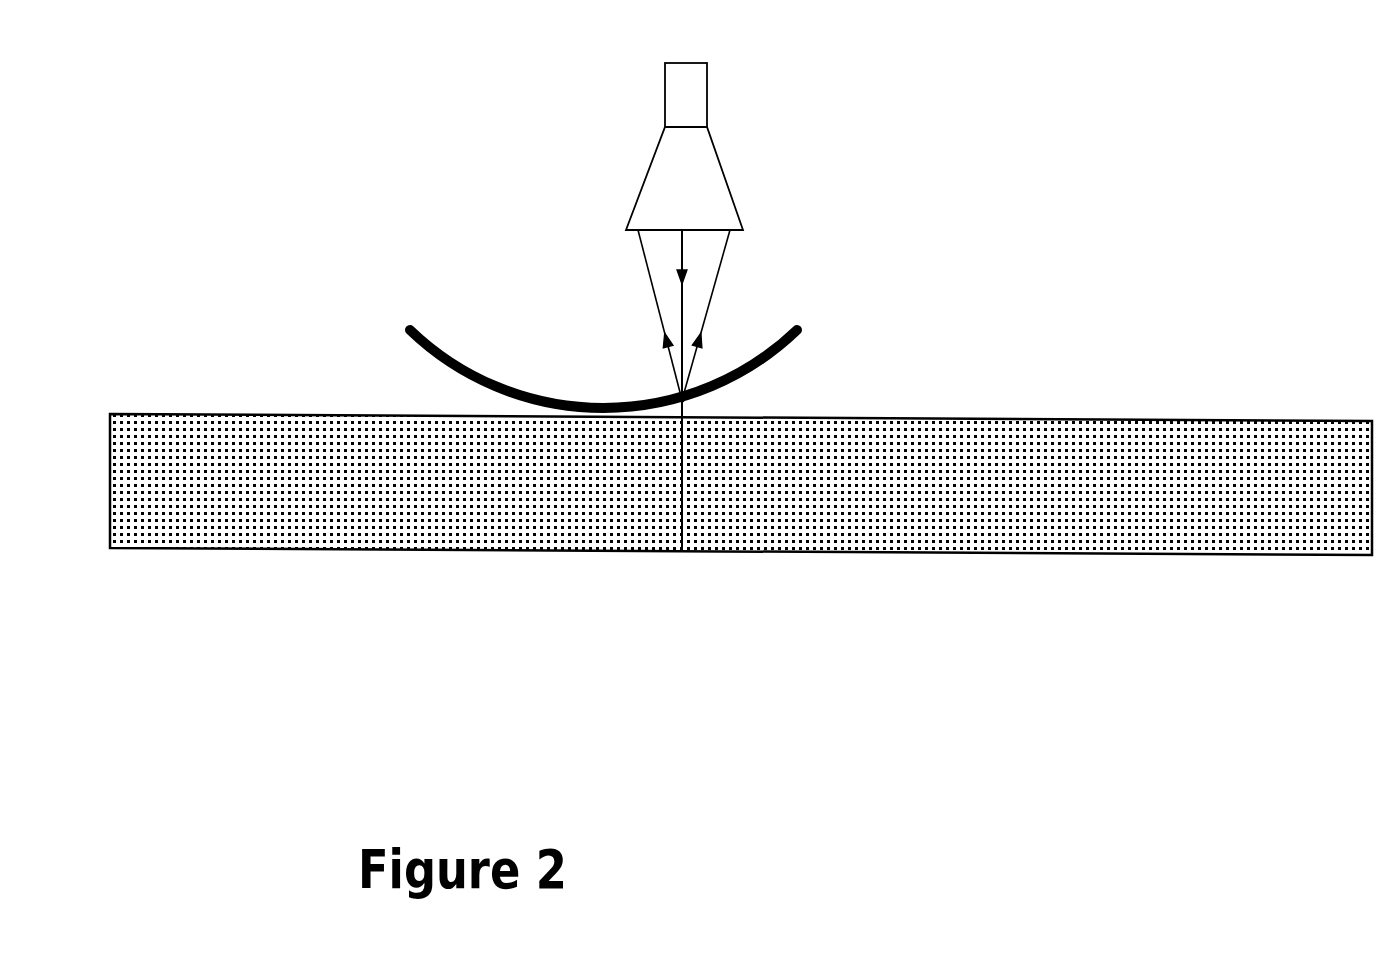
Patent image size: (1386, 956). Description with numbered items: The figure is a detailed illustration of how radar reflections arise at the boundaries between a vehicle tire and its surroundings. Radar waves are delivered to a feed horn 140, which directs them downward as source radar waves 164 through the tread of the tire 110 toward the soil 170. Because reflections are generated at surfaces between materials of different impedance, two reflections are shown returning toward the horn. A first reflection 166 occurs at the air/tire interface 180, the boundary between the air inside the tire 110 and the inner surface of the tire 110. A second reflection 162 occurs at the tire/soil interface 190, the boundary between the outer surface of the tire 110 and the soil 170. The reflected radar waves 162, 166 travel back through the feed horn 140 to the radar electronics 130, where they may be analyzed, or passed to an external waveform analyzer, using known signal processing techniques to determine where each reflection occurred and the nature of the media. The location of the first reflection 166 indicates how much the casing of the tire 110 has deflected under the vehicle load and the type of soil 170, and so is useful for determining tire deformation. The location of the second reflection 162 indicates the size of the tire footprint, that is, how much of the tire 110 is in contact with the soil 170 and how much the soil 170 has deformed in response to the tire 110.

The tire 110 is at (799, 353).
The radar electronics 130 is at (707, 82).
The feed horn 140 is at (718, 150).
The reflected radar waves 162 is at (637, 277).
The source radar waves 164 is at (688, 270).
The reflected radar waves 166 is at (733, 262).
The soil 170 is at (741, 484).
The air/tire interface 180 is at (678, 395).
The tire/soil interface 190 is at (692, 419).